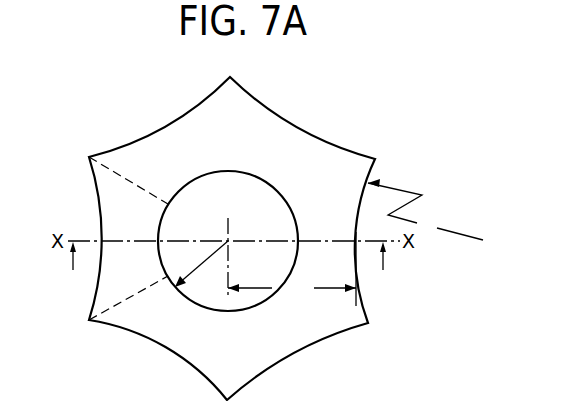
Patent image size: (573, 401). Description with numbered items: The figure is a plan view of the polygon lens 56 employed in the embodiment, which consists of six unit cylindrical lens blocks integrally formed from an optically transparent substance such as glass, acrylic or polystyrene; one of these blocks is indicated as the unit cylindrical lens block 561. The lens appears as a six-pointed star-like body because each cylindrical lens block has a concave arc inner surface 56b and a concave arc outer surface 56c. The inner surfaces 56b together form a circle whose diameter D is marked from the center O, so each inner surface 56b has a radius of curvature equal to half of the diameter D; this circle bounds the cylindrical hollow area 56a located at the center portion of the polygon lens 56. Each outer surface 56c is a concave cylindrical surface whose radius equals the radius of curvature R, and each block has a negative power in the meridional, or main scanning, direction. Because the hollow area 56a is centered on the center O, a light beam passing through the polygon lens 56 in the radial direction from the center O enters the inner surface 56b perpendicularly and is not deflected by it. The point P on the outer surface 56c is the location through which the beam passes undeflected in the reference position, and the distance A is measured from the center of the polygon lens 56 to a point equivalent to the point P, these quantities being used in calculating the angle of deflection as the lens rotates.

The polygon lens 56 is at (241, 147).
The cylindrical hollow area 56a is at (203, 292).
The inner surface 56b is at (181, 190).
The outer surface 56c is at (358, 293).
The unit cylindrical lens block 561 is at (108, 203).
The diameter D is at (239, 252).
The center O is at (252, 264).
The distance A is at (292, 290).
The radius of curvature R is at (425, 209).
The point P is at (356, 233).